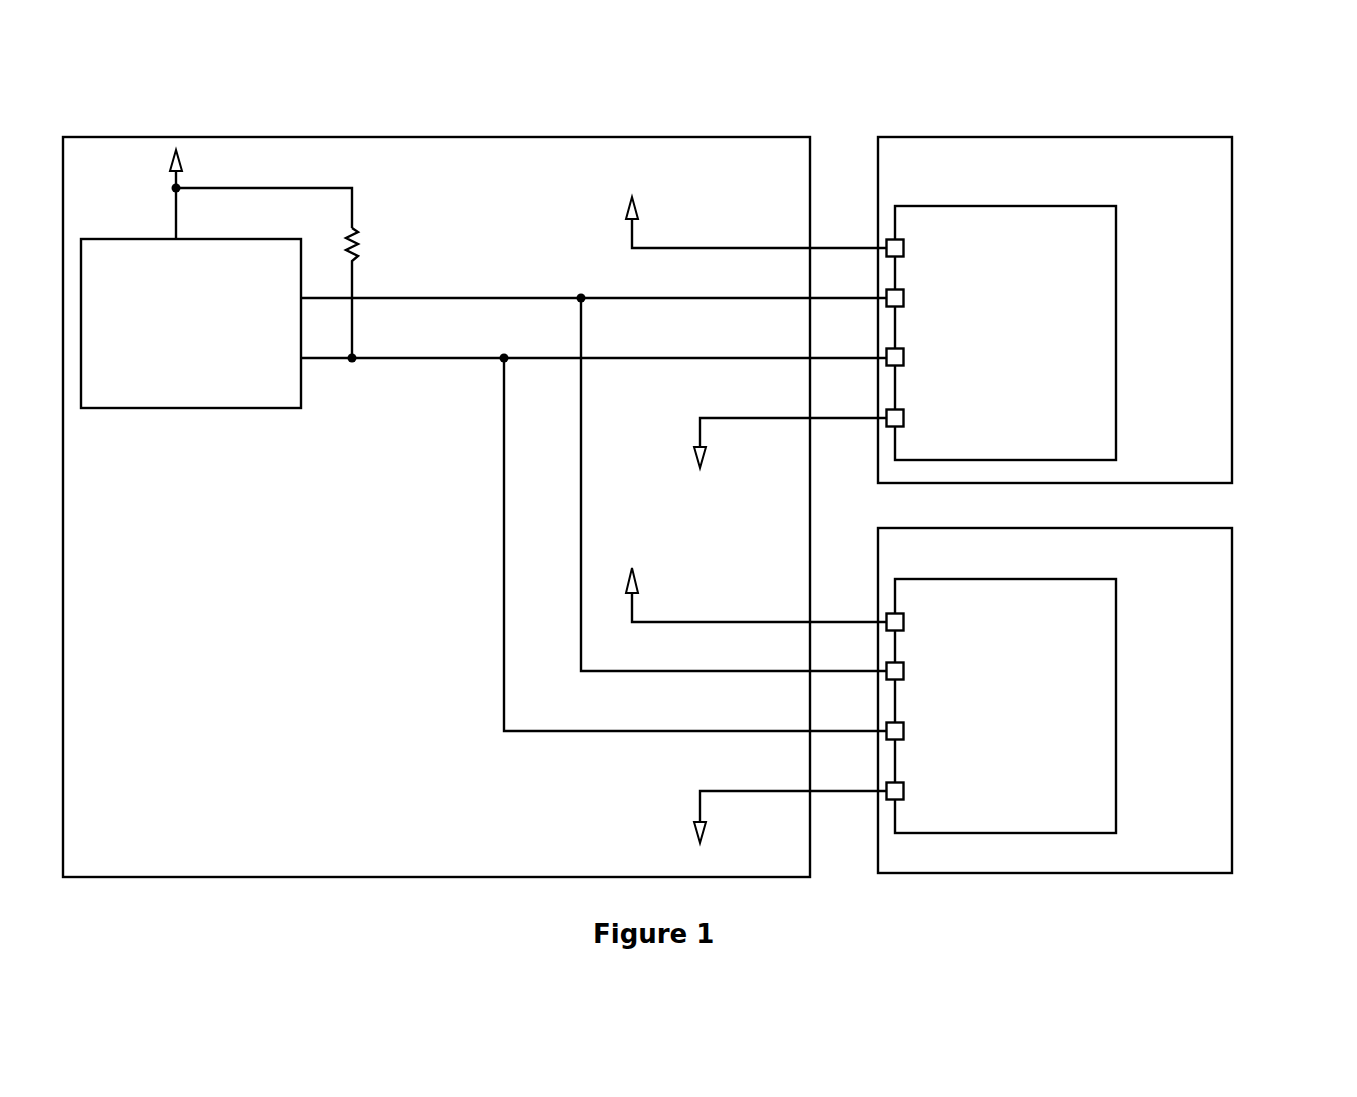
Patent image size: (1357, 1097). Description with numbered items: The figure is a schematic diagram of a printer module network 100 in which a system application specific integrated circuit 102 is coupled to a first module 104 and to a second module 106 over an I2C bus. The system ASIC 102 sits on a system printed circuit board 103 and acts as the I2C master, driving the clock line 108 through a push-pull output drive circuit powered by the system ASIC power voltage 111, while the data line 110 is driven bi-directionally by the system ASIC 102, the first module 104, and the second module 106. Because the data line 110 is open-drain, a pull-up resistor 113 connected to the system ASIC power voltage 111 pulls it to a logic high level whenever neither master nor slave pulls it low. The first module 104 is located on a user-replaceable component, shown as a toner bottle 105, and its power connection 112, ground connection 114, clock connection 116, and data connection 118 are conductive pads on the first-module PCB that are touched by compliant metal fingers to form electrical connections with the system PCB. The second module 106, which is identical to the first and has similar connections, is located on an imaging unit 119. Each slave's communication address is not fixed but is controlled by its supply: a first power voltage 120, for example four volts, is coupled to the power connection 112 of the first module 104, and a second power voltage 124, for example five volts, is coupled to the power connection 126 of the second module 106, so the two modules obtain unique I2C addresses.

The printer module network 100 is at (1267, 121).
The system application specific integrated circuit 102 is at (241, 239).
The system printed circuit board 103 is at (221, 137).
The first module 104 is at (966, 325).
The toner bottle 105 is at (1233, 375).
The second module 106 is at (1007, 686).
The clock line 108 is at (395, 298).
The data line 110 is at (425, 358).
The system ASIC power voltage 111 is at (166, 162).
The power connection 112 is at (900, 240).
The pull-up resistor 113 is at (356, 232).
The ground connection 114 is at (888, 427).
The clock connection 116 is at (887, 308).
The data connection 118 is at (887, 367).
The imaging unit 119 is at (1233, 698).
The first power voltage 120 is at (640, 205).
The second power voltage 124 is at (634, 578).
The power connection 126 is at (904, 613).